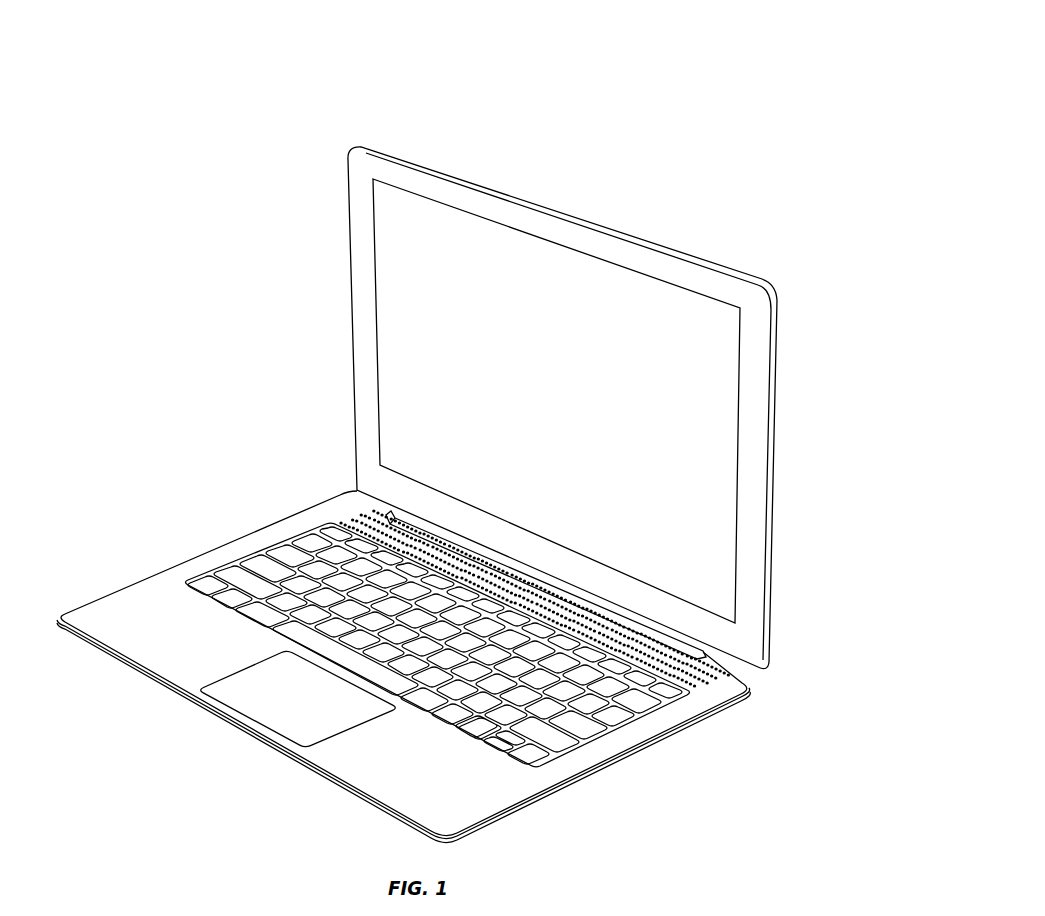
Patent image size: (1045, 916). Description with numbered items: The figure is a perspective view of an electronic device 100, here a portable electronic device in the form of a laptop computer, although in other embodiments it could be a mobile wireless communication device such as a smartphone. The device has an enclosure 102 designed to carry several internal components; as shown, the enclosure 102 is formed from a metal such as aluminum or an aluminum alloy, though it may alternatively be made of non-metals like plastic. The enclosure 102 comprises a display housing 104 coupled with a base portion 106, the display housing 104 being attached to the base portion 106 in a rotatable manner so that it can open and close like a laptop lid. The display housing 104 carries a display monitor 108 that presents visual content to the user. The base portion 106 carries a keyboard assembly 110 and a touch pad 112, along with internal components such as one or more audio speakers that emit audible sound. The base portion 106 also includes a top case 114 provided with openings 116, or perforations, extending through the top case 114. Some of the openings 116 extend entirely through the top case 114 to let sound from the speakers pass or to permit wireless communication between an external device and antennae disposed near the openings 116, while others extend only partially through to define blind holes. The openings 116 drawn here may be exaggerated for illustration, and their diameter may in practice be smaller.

The electronic device 100 is at (667, 67).
The enclosure 102 is at (191, 330).
The display housing 104 is at (348, 306).
The base portion 106 is at (142, 516).
The display monitor 108 is at (561, 392).
The keyboard assembly 110 is at (177, 618).
The touch pad 112 is at (308, 701).
The top case 114 is at (262, 528).
The openings 116 is at (708, 689).